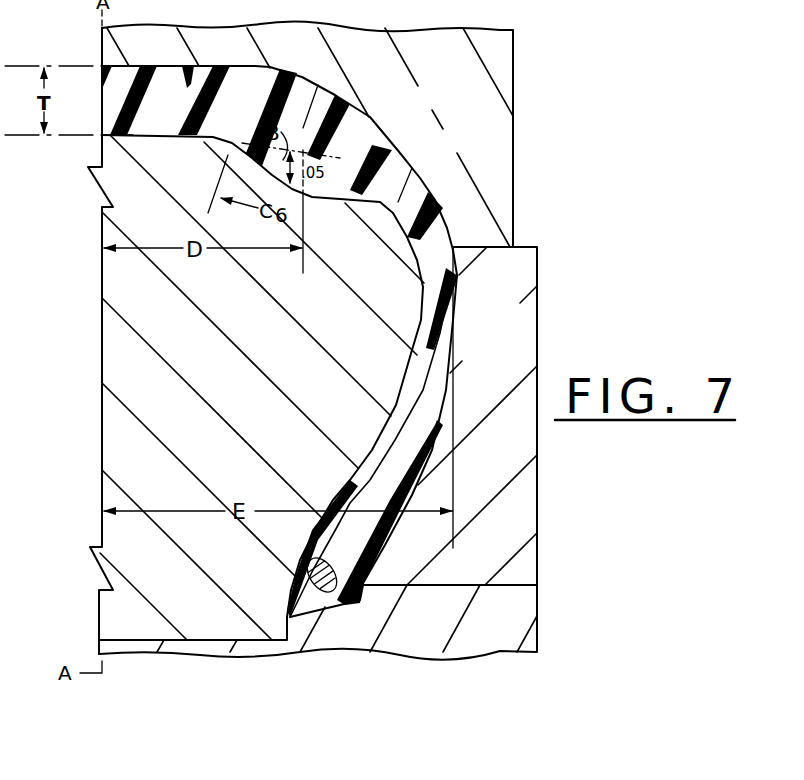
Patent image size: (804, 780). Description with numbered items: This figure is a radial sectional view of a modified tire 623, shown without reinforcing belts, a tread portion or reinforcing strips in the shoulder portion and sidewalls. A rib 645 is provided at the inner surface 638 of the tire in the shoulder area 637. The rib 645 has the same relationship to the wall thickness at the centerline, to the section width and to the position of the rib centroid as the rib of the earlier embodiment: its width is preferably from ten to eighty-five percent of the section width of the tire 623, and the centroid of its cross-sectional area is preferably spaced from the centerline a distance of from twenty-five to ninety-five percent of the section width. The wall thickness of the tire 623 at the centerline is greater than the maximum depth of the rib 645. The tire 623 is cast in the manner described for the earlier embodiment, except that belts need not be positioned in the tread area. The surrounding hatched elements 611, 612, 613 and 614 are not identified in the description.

The upper housing block 611 is at (514, 147).
The lower housing block 612 is at (537, 637).
The side housing block 613 is at (537, 313).
The main body block 614 is at (103, 376).
The tire 623 is at (450, 372).
The shoulder area 637 is at (364, 133).
The inner surface 638 is at (424, 300).
The rib 645 is at (349, 181).